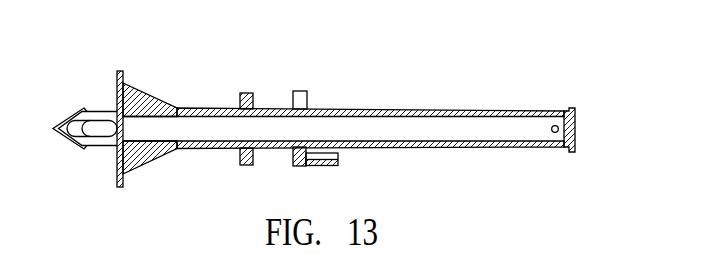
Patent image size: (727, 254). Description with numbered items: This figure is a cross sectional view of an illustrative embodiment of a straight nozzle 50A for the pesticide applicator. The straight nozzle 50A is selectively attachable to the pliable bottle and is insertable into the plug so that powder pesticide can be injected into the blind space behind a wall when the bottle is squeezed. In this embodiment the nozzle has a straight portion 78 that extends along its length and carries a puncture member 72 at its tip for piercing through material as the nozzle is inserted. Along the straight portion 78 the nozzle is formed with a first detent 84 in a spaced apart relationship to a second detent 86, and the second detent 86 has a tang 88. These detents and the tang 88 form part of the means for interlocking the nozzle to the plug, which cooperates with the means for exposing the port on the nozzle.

The straight nozzle 50A is at (380, 97).
The puncture member 72 is at (80, 109).
The straight portion 78 is at (152, 95).
The first detent 84 is at (240, 93).
The second detent 86 is at (285, 170).
The tang 88 is at (325, 168).